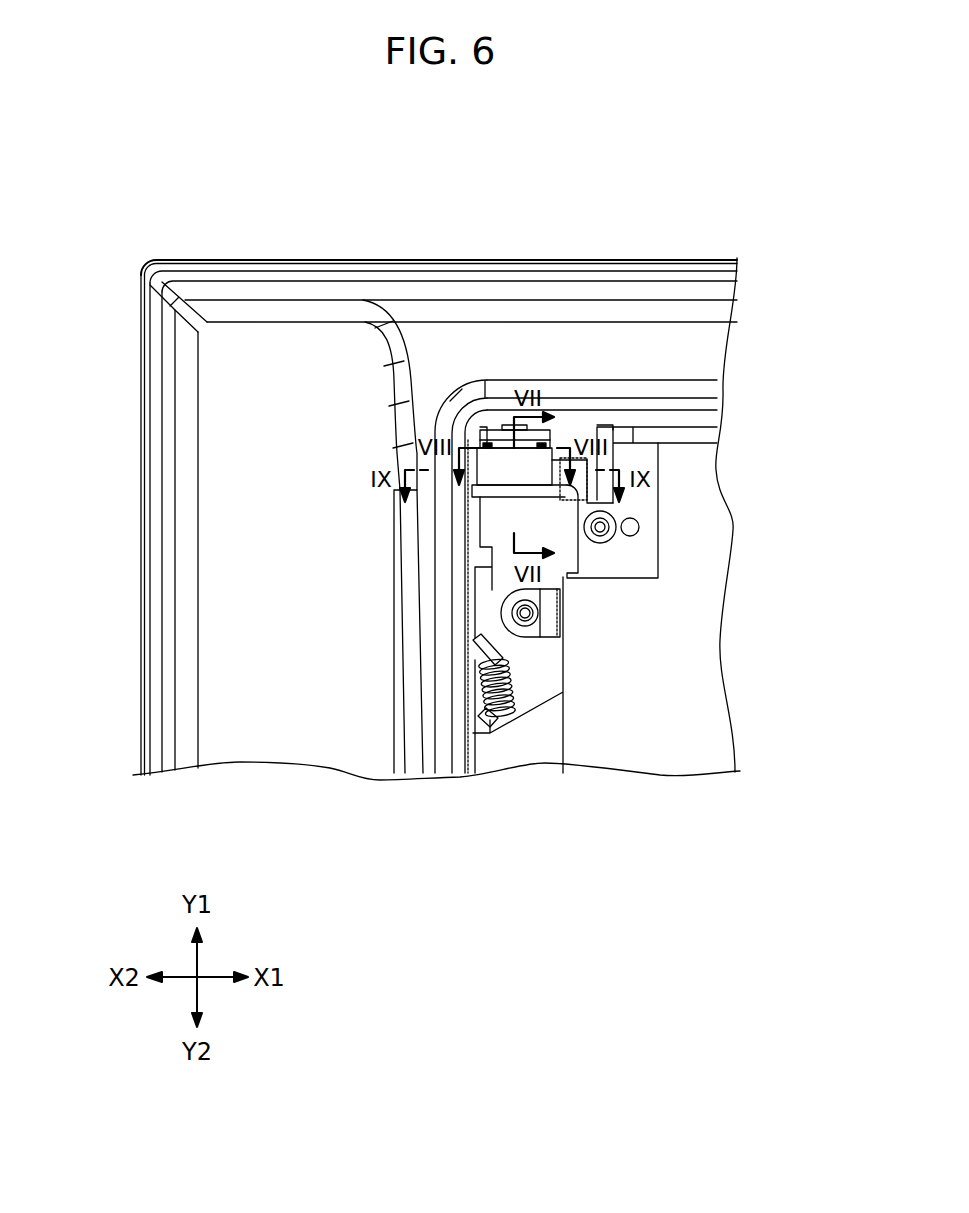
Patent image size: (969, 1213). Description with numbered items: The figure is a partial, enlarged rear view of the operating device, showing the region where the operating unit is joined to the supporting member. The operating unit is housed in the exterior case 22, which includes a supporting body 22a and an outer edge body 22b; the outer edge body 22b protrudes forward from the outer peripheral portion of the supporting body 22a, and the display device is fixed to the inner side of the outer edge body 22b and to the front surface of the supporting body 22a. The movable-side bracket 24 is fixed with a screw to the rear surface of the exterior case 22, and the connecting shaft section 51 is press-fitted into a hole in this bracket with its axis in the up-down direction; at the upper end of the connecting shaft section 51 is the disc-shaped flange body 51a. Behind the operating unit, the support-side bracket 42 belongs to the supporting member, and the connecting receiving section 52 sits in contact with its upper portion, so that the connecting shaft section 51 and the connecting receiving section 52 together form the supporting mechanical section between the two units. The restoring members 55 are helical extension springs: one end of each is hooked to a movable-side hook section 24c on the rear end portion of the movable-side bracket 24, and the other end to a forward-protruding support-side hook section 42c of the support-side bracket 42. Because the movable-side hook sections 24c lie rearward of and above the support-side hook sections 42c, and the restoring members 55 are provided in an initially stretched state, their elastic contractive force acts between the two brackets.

The exterior case 22 is at (213, 194).
The supporting body 22a is at (312, 340).
The outer edge body 22b is at (243, 277).
The movable-side bracket 24 is at (550, 437).
The movable-side hook sections 24c is at (480, 647).
The support-side bracket 42 is at (533, 493).
The support-side hook sections 42c is at (490, 713).
The connecting shaft section 51 is at (537, 475).
The flange body 51a is at (498, 443).
The connecting receiving section 52 is at (550, 493).
The restoring members 55 is at (510, 682).